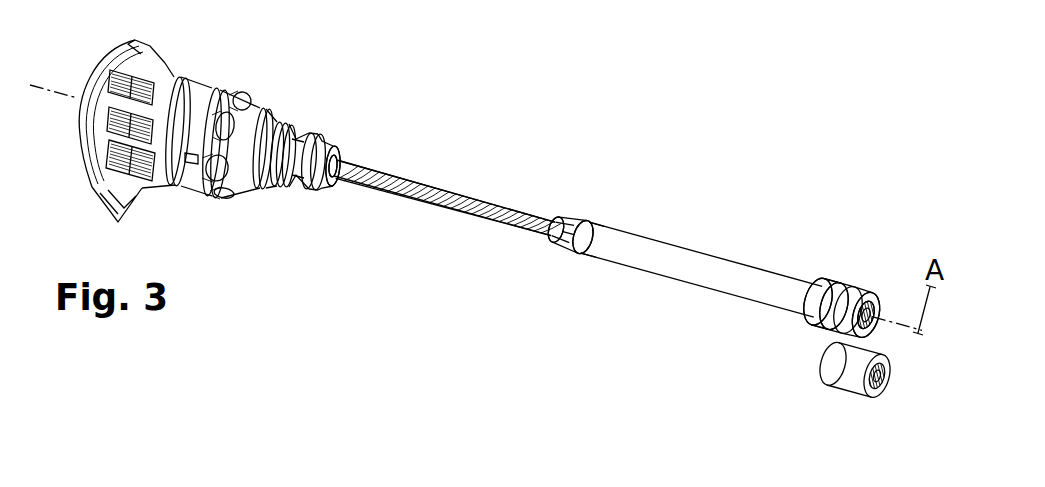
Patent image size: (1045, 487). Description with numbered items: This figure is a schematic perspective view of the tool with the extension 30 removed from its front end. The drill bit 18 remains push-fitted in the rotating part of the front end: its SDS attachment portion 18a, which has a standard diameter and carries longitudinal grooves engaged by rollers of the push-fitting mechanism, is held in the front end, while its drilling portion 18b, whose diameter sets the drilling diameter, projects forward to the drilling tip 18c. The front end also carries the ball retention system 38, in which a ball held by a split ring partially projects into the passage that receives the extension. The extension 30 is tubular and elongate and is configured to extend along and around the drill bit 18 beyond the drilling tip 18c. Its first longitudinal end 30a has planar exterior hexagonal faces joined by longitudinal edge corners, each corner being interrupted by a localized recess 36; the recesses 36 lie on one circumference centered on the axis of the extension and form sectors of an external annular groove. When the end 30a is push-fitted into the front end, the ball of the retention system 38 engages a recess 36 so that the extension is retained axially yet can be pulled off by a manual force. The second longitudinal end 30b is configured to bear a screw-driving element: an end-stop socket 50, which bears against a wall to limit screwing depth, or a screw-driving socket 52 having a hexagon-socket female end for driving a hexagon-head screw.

The drill bit 18 is at (473, 187).
The SDS attachment portion 18a is at (313, 178).
The drilling portion 18b is at (425, 205).
The drilling tip 18c is at (537, 237).
The extension 30 is at (708, 242).
The first longitudinal end 30a is at (578, 217).
The second longitudinal end 30b is at (820, 332).
The localized recess 36 is at (562, 232).
The ball retention system 38 is at (299, 141).
The end-stop socket 50 is at (903, 403).
The screw-driving socket 52 is at (840, 290).